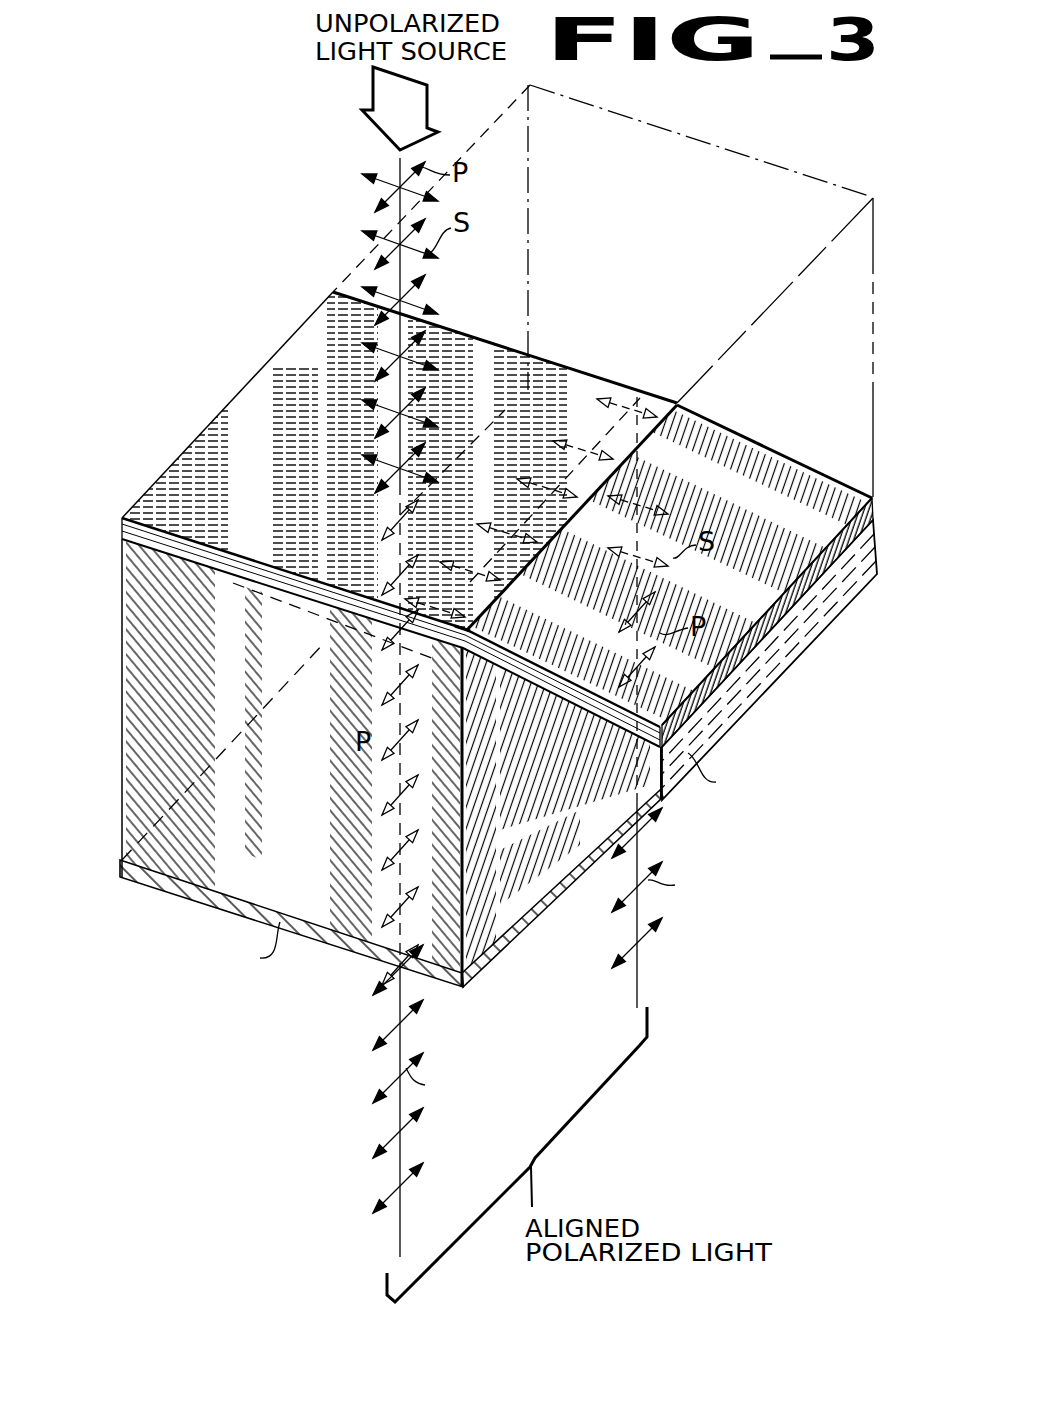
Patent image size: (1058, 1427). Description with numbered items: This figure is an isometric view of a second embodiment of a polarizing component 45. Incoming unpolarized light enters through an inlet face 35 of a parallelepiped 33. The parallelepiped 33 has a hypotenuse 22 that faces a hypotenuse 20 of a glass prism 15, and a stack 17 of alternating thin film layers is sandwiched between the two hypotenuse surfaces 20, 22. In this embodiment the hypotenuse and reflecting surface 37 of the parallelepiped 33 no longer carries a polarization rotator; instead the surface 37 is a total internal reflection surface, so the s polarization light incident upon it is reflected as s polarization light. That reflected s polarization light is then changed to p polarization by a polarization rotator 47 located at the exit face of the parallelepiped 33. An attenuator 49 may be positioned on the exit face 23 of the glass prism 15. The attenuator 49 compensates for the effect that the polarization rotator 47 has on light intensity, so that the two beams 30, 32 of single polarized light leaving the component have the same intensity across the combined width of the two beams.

The glass prism 15 is at (356, 763).
The stack of alternating thin film layers 17 is at (118, 532).
The hypotenuse 20 is at (358, 640).
The hypotenuse 22 is at (438, 612).
The exit face 23 is at (293, 756).
The beam 30 is at (338, 1117).
The beam 32 is at (686, 853).
The parallelepiped 33 is at (399, 455).
The inlet face 35 is at (218, 295).
The hypotenuse and reflecting surface 37 is at (722, 437).
The polarizing component 45 is at (188, 354).
The polarization rotator 47 is at (783, 650).
The attenuator 49 is at (322, 935).